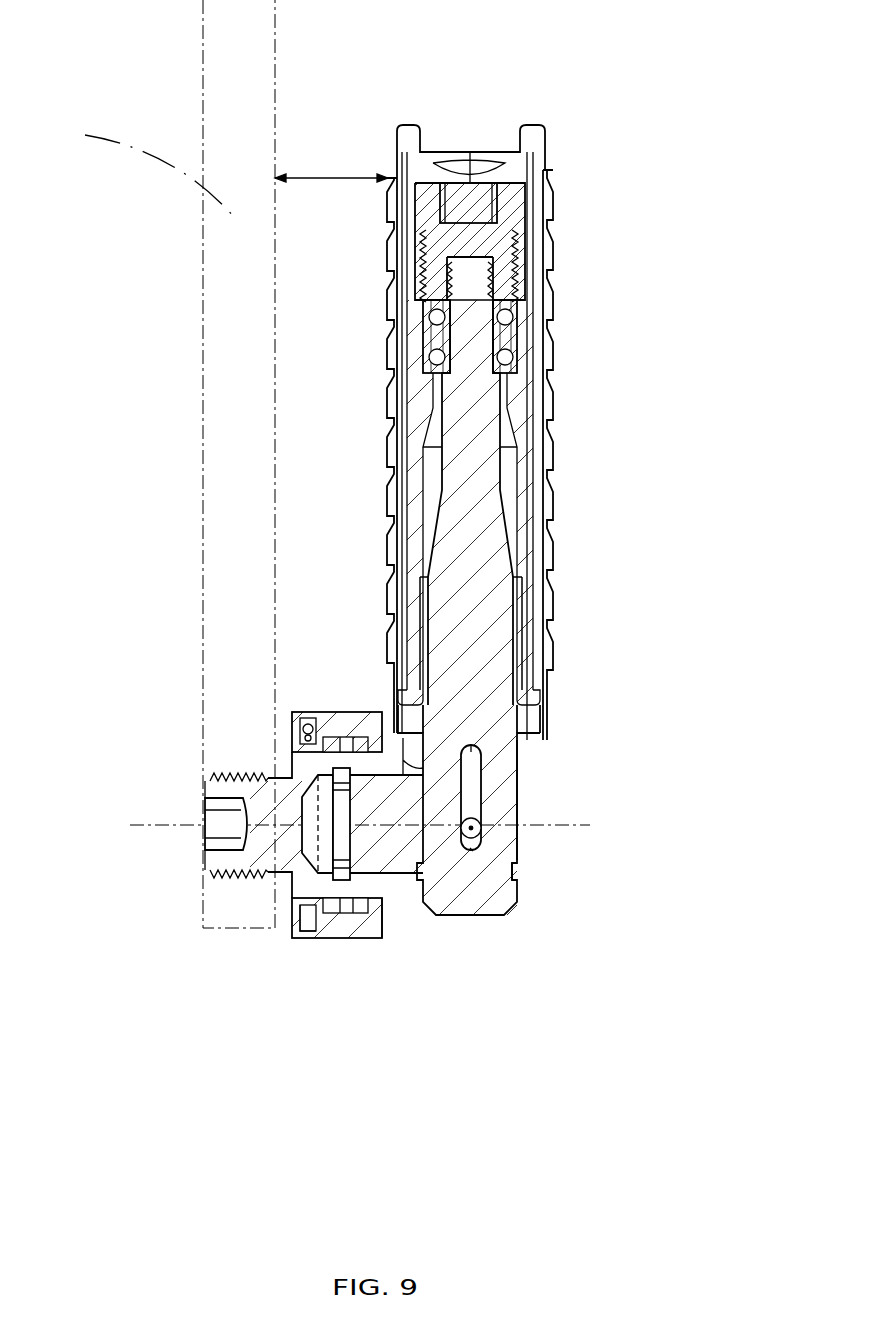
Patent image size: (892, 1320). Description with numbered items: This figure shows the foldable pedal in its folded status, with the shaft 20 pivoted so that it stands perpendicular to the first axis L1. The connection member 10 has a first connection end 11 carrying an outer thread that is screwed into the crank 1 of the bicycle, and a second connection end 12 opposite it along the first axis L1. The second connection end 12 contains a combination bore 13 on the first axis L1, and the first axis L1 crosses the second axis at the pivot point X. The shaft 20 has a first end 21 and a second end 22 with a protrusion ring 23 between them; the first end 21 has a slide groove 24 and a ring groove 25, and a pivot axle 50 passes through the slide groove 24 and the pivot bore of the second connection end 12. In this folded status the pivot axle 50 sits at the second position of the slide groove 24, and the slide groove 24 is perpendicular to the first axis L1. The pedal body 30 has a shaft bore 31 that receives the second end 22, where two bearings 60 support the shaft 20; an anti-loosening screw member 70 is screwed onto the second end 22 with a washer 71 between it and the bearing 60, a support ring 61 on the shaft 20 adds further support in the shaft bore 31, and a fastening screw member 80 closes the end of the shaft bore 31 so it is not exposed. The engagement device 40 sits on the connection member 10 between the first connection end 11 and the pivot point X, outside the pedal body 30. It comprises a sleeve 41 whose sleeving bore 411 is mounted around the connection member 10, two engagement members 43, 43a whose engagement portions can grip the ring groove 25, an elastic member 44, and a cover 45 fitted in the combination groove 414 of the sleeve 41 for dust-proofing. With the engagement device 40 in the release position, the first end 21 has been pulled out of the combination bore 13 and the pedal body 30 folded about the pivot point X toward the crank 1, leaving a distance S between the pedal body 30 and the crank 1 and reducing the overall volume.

The crank 1 is at (150, 172).
The connection member 10 is at (196, 858).
The first connection end 11 is at (243, 878).
The second connection end 12 is at (400, 900).
The combination bore 13 is at (470, 900).
The shaft 20 is at (483, 650).
The first end 21 is at (502, 790).
The second end 22 is at (480, 328).
The protrusion ring 23 is at (518, 718).
The slide groove 24 is at (480, 822).
The ring groove 25 is at (515, 878).
The pedal body 30 is at (560, 118).
The shaft bore 31 is at (512, 470).
The engagement device 40 is at (325, 690).
The sleeve 41 is at (330, 928).
The sleeving bore 411 is at (383, 893).
The combination groove 414 is at (312, 918).
The engagement member 43 is at (338, 745).
The engagement member 43a is at (355, 912).
The elastic member 44 is at (310, 735).
The cover 45 is at (295, 920).
The pivot axle 50 is at (476, 829).
The bearing 60 is at (438, 356).
The support ring 61 is at (522, 598).
The anti-loosening screw member 70 is at (498, 278).
The washer 71 is at (440, 300).
The fastening screw member 80 is at (510, 204).
The first axis L1 is at (133, 812).
The distance from the pedal body to the crank S is at (331, 164).
The pivot point X is at (475, 850).